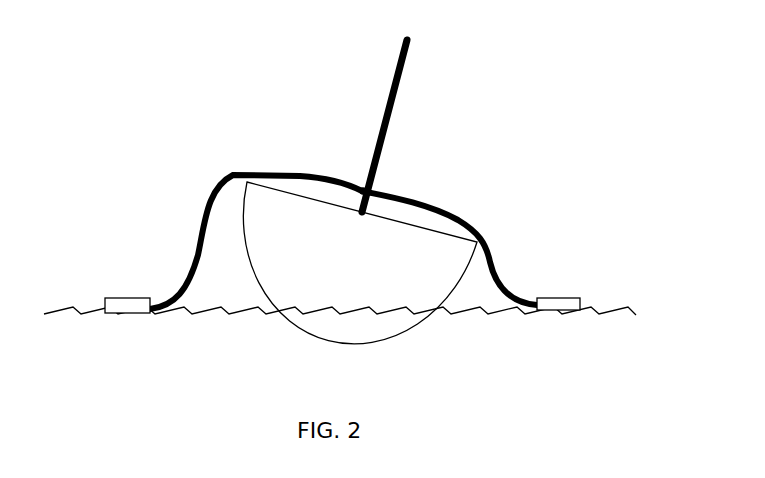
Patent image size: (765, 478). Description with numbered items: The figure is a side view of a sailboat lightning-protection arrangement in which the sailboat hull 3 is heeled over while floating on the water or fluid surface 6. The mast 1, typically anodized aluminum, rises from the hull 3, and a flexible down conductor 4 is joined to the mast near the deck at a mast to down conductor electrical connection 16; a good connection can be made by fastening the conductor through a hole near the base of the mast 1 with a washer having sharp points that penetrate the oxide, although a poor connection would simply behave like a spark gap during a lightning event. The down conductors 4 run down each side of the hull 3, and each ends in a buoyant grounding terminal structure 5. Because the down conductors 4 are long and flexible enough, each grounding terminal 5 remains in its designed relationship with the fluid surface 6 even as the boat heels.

The mast 1 is at (408, 118).
The sailboat hull 3 is at (402, 350).
The down conductor 4 is at (218, 168).
The buoyant grounding terminal structure 5 is at (128, 285).
The fluid surface 6 is at (618, 298).
The mast to down conductor electrical connection 16 is at (358, 175).